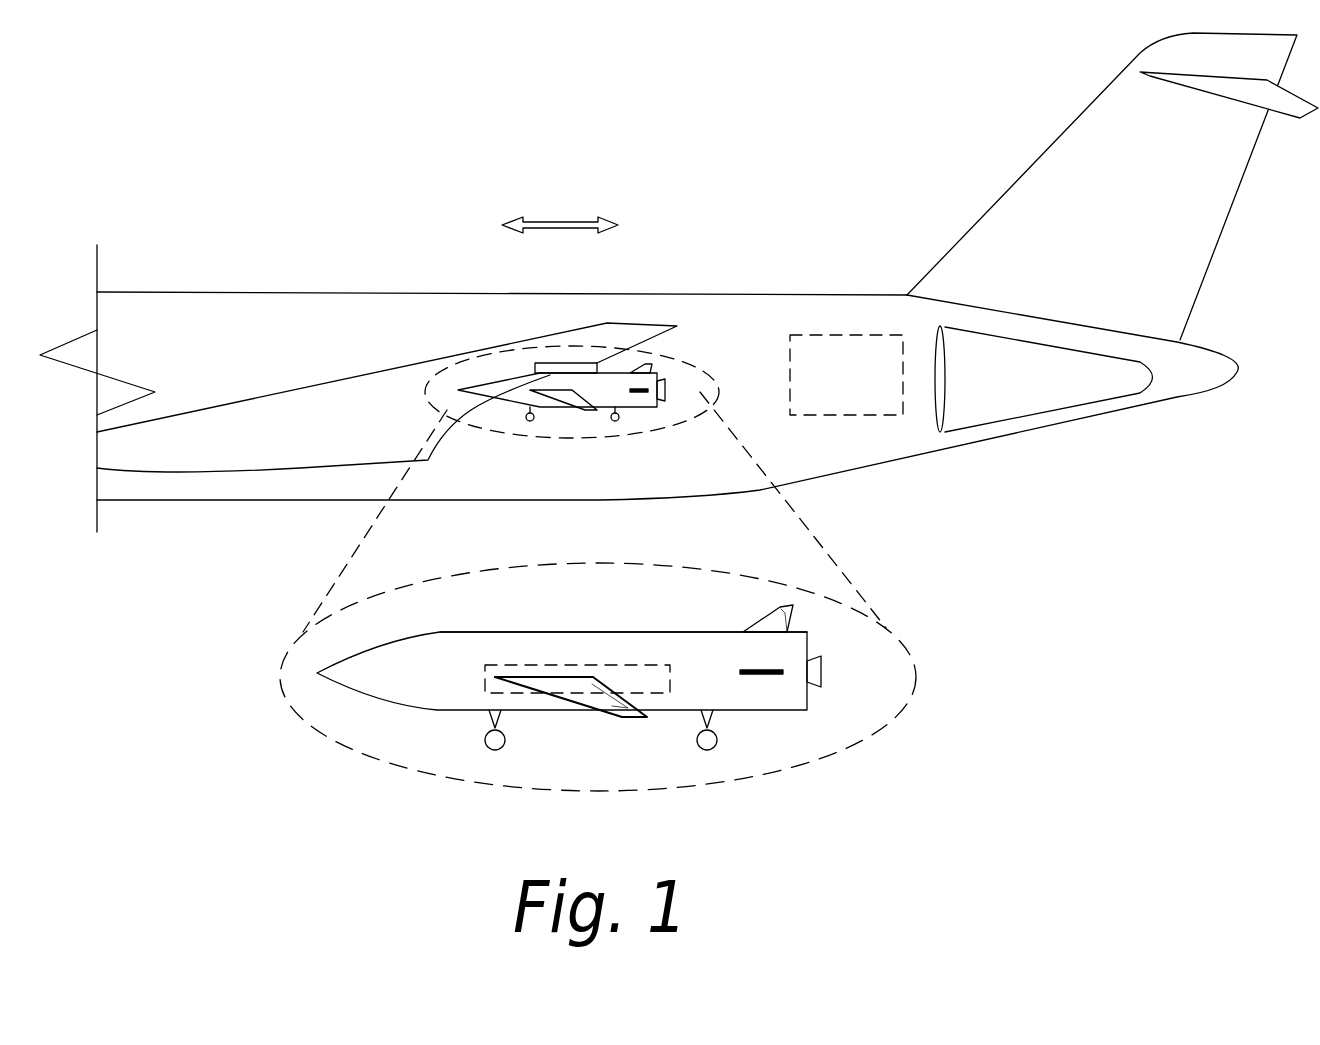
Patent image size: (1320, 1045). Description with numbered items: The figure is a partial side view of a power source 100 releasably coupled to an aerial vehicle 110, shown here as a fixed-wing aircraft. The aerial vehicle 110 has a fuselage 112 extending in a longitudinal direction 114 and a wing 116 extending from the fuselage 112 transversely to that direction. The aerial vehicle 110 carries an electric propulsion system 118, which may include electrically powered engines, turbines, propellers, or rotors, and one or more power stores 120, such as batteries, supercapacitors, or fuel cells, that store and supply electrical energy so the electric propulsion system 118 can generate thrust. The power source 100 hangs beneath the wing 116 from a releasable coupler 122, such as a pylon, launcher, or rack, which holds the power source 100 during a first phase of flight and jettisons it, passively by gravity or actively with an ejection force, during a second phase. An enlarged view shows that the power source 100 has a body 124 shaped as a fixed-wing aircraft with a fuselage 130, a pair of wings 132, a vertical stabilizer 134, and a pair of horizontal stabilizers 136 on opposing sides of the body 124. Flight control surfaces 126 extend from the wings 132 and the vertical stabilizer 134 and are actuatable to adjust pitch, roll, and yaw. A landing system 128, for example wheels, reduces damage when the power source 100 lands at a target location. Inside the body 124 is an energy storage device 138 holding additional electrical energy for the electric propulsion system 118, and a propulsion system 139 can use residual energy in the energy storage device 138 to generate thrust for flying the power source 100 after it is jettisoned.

The power source 100 is at (601, 424).
The aerial vehicle 110 is at (679, 305).
The fuselage 112 is at (207, 300).
The longitudinal direction 114 is at (537, 220).
The wing 116 is at (212, 462).
The electric propulsion system 118 is at (1033, 418).
The power store 120 is at (873, 415).
The releasable coupler 122 is at (637, 350).
The body 124 is at (485, 623).
The flight control surfaces 126 is at (613, 700).
The landing system 128 is at (486, 740).
The fuselage 130 is at (626, 632).
The wings 132 is at (557, 690).
The vertical stabilizer 134 is at (757, 620).
The horizontal stabilizers 136 is at (757, 676).
The energy storage device 138 is at (587, 665).
The propulsion system 139 is at (821, 670).